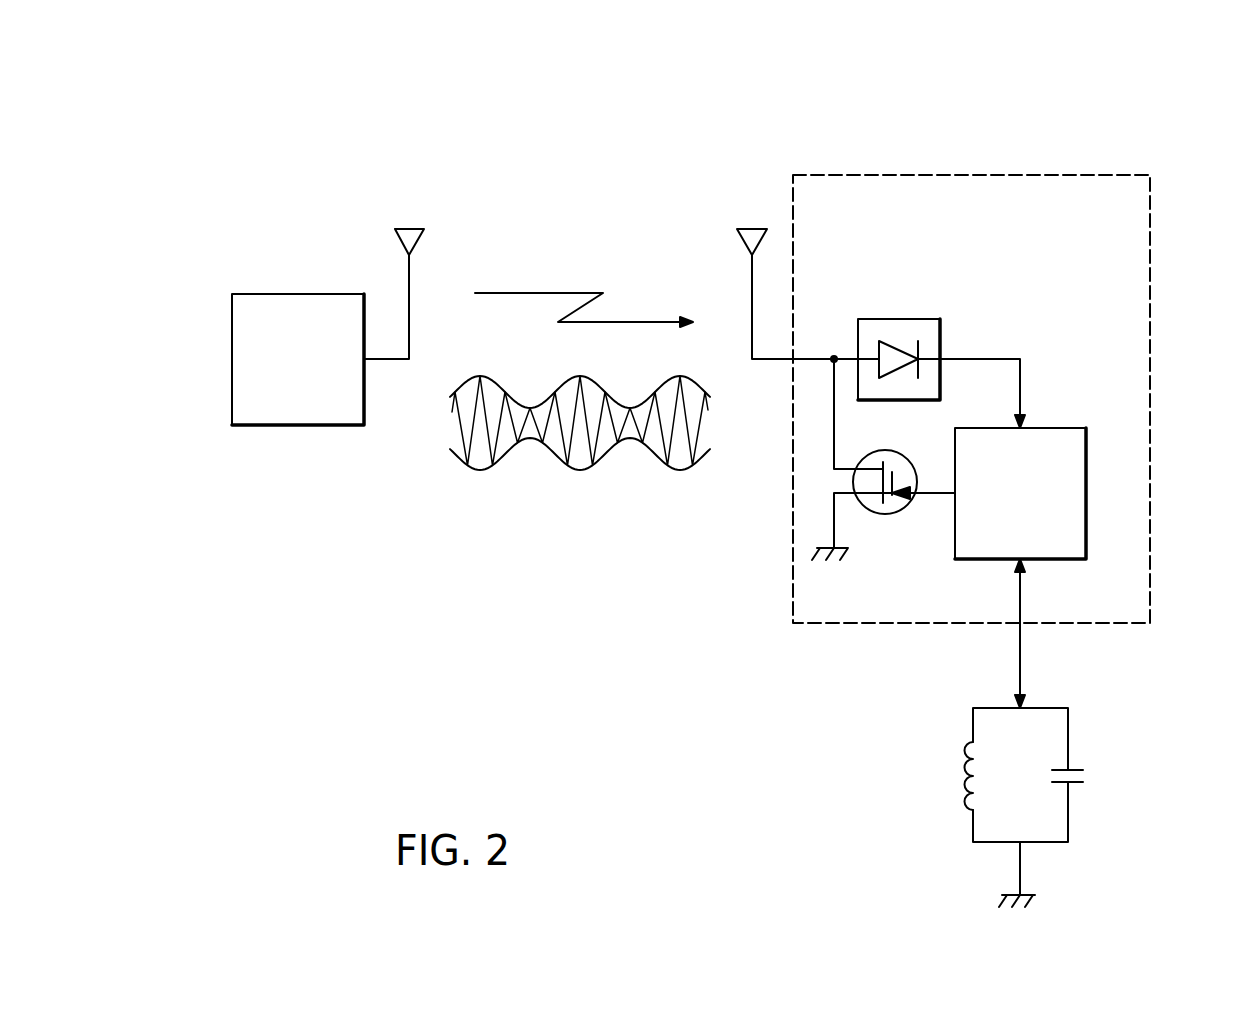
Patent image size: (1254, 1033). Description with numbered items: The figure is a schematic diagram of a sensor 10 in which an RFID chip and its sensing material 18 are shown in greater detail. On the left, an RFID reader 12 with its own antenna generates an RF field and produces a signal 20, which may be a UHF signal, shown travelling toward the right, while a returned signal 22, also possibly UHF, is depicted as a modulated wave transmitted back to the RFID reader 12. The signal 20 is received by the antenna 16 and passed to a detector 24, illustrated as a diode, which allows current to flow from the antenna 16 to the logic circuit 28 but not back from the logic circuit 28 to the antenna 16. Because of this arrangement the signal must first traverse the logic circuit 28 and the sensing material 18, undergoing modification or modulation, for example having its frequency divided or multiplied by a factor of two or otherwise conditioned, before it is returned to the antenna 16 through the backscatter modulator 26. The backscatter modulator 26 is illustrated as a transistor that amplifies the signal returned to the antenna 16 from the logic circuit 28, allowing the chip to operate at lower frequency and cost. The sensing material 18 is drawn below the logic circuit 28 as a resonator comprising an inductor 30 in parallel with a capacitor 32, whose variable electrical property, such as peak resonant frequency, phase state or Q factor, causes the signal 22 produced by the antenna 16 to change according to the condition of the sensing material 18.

The sensor 10 is at (418, 128).
The RFID reader 12 is at (302, 293).
The antenna 16 is at (752, 268).
The sensing material 18 is at (1050, 766).
The signal 20 is at (572, 293).
The signal 22 is at (578, 472).
The detector 24 is at (898, 319).
The backscatter modulator 26 is at (883, 515).
The logic circuit 28 is at (1062, 428).
The inductor 30 is at (965, 770).
The capacitor 32 is at (1087, 753).